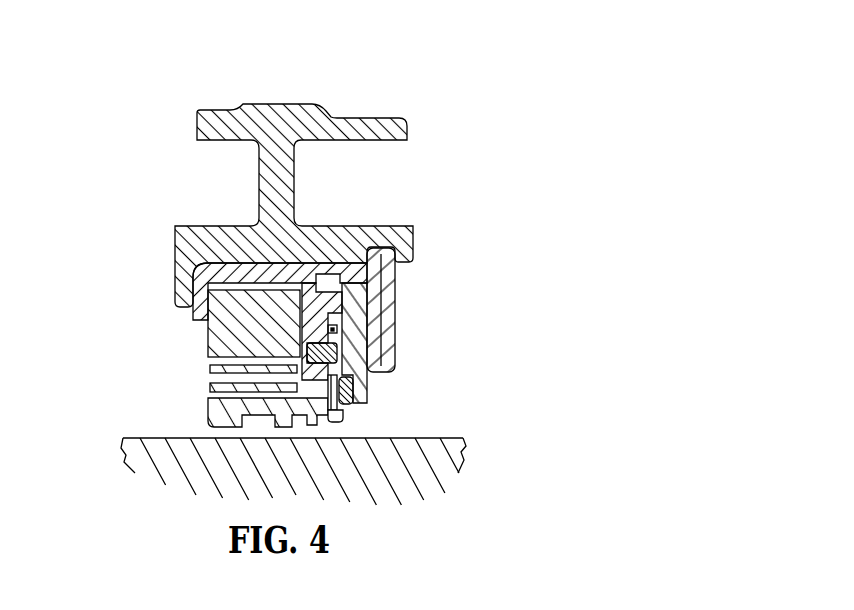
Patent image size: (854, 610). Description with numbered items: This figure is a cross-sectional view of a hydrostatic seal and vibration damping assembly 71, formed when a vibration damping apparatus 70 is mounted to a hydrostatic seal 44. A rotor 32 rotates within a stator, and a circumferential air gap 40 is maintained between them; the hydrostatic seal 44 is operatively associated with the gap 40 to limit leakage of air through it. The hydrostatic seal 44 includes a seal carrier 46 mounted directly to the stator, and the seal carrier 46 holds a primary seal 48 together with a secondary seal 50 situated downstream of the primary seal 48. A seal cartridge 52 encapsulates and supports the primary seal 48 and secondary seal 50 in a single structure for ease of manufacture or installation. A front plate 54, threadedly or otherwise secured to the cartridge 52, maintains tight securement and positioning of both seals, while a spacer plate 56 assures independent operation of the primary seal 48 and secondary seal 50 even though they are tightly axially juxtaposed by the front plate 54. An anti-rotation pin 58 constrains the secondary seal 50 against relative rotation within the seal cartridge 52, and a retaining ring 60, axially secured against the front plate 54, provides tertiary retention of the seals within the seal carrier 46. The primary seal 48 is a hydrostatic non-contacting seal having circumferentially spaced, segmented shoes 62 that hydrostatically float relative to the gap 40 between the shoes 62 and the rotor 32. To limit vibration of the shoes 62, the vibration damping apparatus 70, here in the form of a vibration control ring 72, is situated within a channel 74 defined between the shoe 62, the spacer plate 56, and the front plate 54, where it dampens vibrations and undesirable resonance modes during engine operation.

The rotor 32 is at (425, 490).
The circumferential air gap 40 is at (231, 432).
The hydrostatic seal 44 is at (165, 237).
The seal carrier 46 is at (283, 184).
The primary seal 48 is at (234, 345).
The secondary seal 50 is at (358, 284).
The seal cartridge 52 is at (344, 264).
The front plate 54 is at (358, 376).
The spacer plate 56 is at (343, 317).
The anti-rotation pin 58 is at (338, 348).
The retaining ring 60 is at (389, 333).
The shoes 62 is at (224, 409).
The vibration damping apparatus 70 is at (360, 406).
The hydrostatic seal and vibration damping assembly 71 is at (384, 71).
The vibration control ring 72 is at (347, 412).
The channel 74 is at (335, 416).